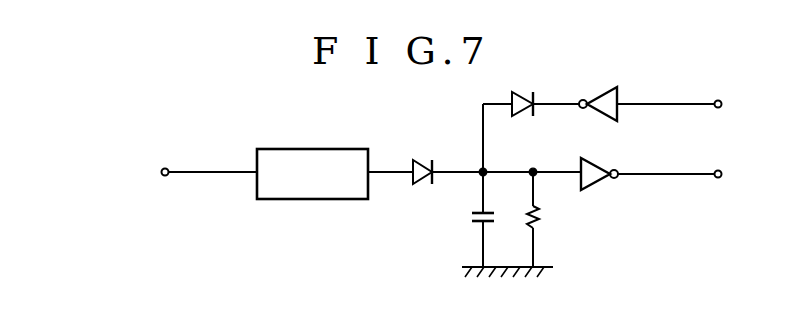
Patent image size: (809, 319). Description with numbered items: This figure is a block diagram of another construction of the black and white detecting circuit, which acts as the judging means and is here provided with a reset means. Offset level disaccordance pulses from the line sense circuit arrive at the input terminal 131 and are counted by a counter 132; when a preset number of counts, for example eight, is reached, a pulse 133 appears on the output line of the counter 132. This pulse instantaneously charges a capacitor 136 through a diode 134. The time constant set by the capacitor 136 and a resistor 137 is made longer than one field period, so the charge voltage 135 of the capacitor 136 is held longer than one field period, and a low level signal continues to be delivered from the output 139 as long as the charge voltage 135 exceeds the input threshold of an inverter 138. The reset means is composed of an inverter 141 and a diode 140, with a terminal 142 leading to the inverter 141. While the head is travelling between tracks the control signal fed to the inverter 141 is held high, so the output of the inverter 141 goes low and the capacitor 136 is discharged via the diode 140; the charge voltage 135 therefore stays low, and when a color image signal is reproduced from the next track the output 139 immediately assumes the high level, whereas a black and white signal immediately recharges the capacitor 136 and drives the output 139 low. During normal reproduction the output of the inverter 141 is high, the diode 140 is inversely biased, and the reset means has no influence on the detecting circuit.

The input terminal 131 is at (165, 168).
The counter 132 is at (355, 148).
The pulse 133 is at (391, 170).
The diode 134 is at (420, 160).
The charge voltage 135 is at (512, 170).
The capacitor 136 is at (470, 217).
The resistor 137 is at (548, 219).
The inverter 138 is at (599, 161).
The output 139 is at (722, 174).
The diode 140 is at (527, 92).
The inverter 141 is at (617, 90).
The output terminal 142 is at (722, 104).